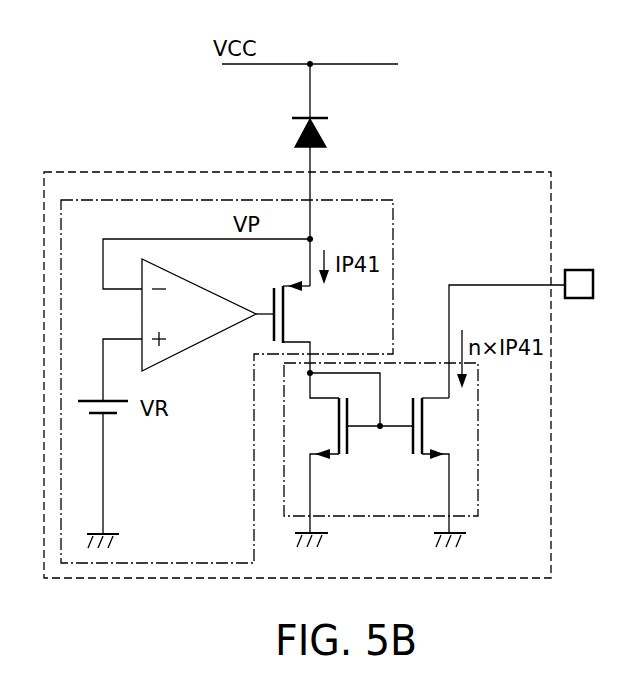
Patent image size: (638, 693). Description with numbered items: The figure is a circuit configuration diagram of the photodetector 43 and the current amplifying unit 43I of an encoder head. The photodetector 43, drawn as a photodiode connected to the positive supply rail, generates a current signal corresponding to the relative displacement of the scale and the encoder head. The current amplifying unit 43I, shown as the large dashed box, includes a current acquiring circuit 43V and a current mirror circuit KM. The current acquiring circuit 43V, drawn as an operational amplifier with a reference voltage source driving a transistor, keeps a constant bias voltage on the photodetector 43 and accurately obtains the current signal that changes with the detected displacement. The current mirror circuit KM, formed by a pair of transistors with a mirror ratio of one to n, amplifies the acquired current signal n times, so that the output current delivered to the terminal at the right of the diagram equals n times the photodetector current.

The photodetector 43 is at (329, 139).
The current acquiring circuit 43V is at (158, 198).
The current amplifying unit 43I is at (474, 170).
The current mirror circuit KM is at (478, 484).